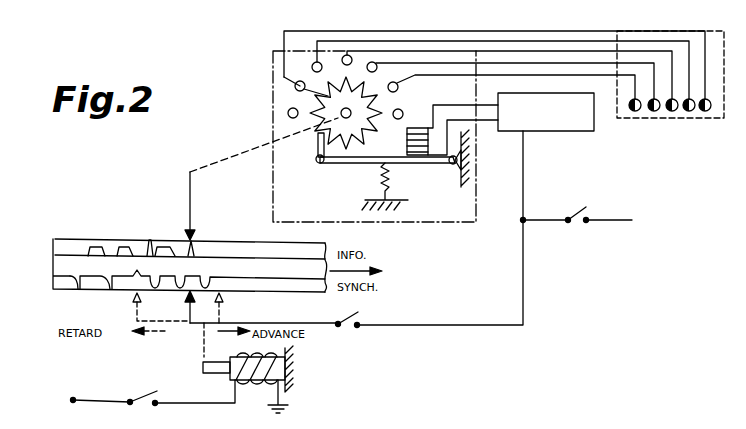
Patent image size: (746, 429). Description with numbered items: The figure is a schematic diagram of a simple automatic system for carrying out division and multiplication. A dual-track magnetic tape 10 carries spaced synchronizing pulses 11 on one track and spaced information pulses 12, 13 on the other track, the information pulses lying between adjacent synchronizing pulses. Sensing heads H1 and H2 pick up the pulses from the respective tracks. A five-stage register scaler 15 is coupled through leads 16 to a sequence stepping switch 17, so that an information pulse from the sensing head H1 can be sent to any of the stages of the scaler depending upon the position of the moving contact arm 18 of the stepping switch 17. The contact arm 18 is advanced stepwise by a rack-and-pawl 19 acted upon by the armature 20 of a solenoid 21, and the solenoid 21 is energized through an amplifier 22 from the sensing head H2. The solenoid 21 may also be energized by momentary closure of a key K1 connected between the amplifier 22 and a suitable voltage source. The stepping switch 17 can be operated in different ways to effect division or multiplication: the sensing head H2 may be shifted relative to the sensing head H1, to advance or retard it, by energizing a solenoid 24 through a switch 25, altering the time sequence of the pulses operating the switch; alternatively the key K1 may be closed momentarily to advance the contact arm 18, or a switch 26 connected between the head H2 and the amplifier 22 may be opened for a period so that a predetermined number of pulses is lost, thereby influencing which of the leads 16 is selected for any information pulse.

The dual-track magnetic tape 10 is at (52, 262).
The synchronizing pulses 11 is at (103, 287).
The information pulses 12 is at (98, 248).
The information pulses 13 is at (150, 240).
The five-stage register scaler 15 is at (665, 119).
The leads 16 is at (512, 28).
The sequence stepping switch 17 is at (274, 79).
The moving contact arm 18 is at (306, 93).
The rack-and-pawl 19 is at (338, 168).
The armature 20 is at (412, 128).
The solenoid 21 is at (400, 164).
The amplifier 22 is at (572, 132).
The solenoid 24 is at (258, 390).
The switch 25 is at (146, 408).
The switch 26 is at (345, 328).
The sensing head H1 is at (193, 236).
The sensing head H2 is at (188, 325).
The key K1 is at (593, 211).